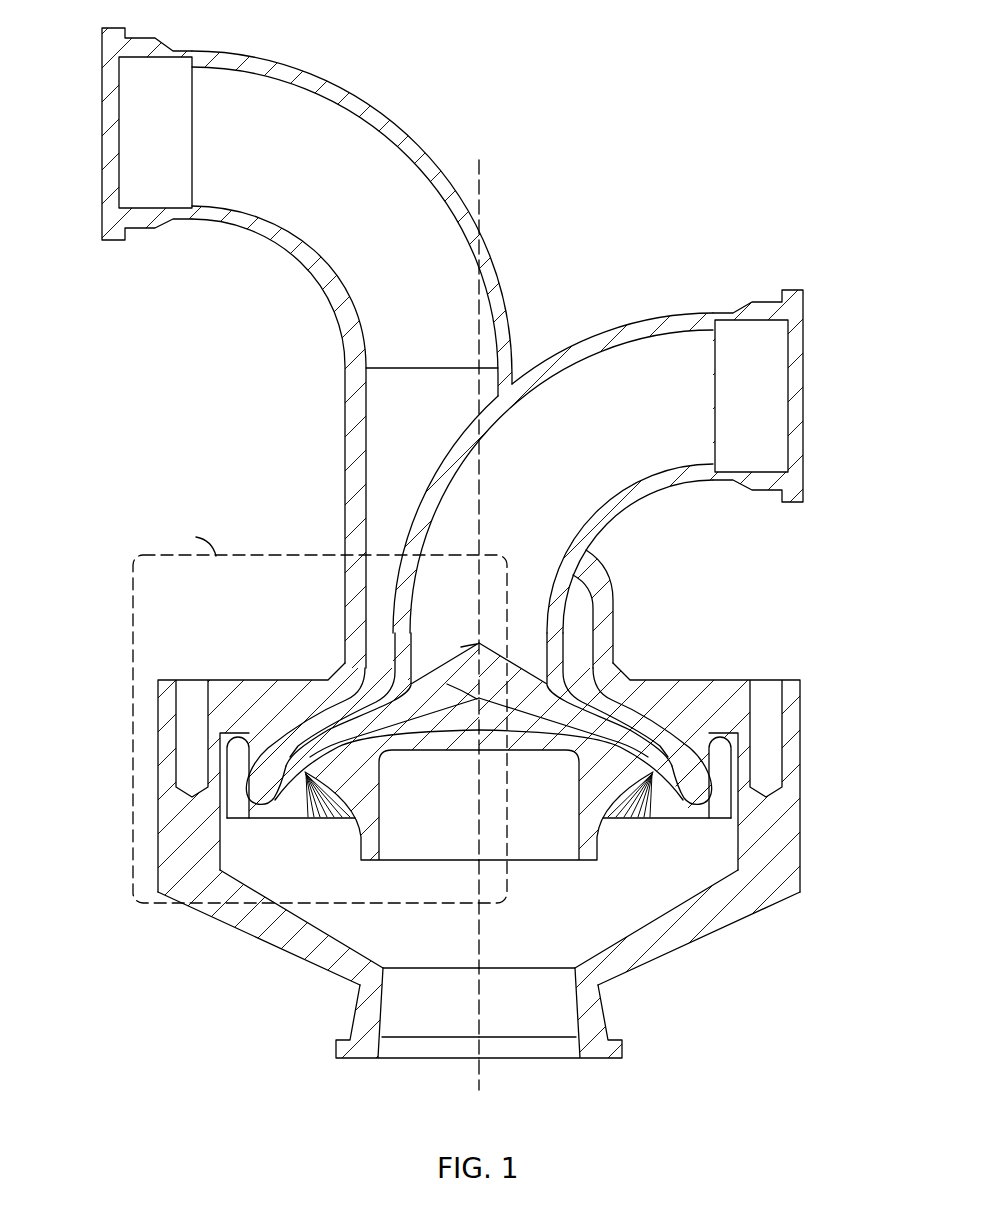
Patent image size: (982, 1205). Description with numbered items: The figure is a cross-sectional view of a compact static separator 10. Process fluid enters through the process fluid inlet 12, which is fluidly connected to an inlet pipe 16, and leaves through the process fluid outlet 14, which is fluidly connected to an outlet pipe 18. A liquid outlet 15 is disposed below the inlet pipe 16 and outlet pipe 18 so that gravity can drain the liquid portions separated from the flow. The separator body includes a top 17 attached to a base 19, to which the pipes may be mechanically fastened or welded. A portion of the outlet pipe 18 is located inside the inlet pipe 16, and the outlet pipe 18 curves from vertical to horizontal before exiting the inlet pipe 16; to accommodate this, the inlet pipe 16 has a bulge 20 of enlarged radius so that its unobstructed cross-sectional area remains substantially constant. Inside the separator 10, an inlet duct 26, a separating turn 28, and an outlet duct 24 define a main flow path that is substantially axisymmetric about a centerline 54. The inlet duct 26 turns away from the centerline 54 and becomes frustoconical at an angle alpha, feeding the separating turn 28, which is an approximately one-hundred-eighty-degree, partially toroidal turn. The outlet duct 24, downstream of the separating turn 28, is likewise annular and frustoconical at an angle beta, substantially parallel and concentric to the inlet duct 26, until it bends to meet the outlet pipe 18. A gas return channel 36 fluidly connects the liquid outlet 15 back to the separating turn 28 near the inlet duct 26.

The separator 10 is at (450, 551).
The process fluid inlet 12 is at (103, 170).
The process fluid outlet 14 is at (803, 388).
The liquid outlet 15 is at (347, 883).
The inlet pipe 16 is at (424, 131).
The top 17 is at (687, 688).
The outlet pipe 18 is at (650, 313).
The base 19 is at (783, 826).
The bulge 20 is at (618, 620).
The outlet duct 24 is at (364, 734).
The inlet duct 26 is at (328, 703).
The separating turn 28 is at (255, 803).
The gas return channel 36 is at (221, 733).
The centerline 54 is at (484, 190).